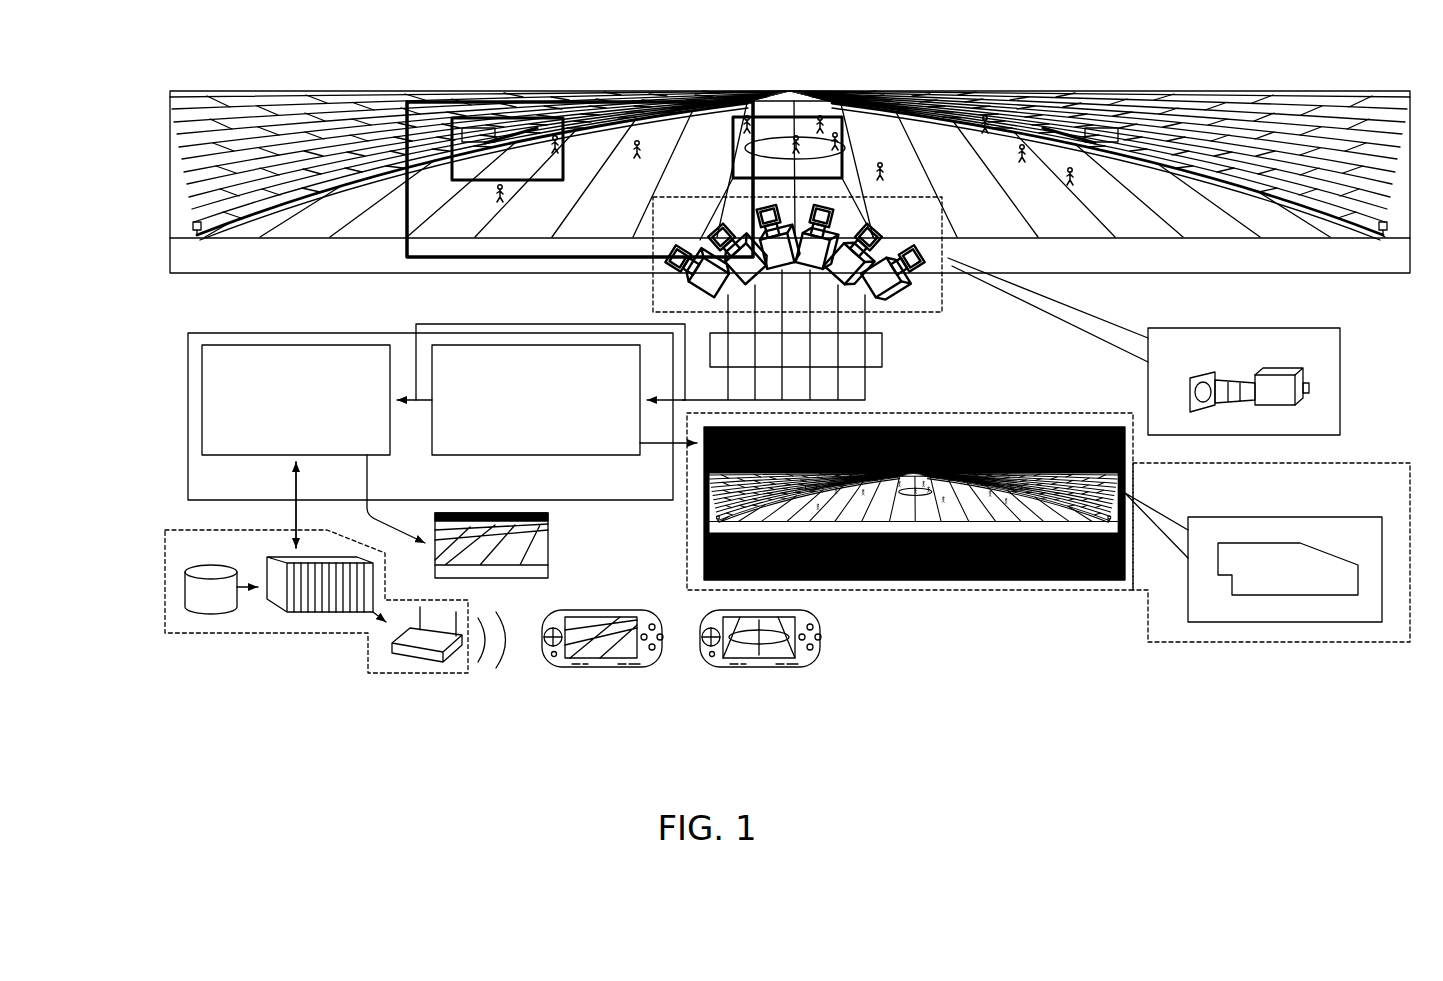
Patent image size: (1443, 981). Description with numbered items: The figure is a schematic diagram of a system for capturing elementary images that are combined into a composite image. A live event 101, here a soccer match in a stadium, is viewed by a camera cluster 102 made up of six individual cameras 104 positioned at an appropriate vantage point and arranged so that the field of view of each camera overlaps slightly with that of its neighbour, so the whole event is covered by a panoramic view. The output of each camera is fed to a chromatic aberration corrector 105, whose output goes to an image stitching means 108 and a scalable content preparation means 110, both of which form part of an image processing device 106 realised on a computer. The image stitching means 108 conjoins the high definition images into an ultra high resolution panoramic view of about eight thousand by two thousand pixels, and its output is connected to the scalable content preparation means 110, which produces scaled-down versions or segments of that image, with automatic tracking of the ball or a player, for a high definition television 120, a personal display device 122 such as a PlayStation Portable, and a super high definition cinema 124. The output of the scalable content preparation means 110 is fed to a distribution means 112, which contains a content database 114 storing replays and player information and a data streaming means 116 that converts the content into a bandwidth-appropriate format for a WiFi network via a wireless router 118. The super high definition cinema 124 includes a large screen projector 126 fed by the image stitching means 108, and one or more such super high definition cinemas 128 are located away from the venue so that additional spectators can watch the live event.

The live event 101 is at (1125, 90).
The camera cluster 102 is at (950, 262).
The camera 104 is at (1300, 375).
The chromatic aberration corrector 105 is at (882, 355).
The image processing device 106 is at (333, 333).
The image stitching means 108 is at (502, 345).
The scalable content preparation means 110 is at (265, 345).
The distribution means 112 is at (165, 598).
The content database 114 is at (208, 612).
The data streaming means 116 is at (300, 612).
The wireless router 118 is at (428, 658).
The high definition television 120 is at (548, 548).
The personal display device 122 is at (620, 668).
The super high definition cinema 124 is at (975, 427).
The large screen projector 126 is at (1330, 517).
The super high definition cinema 128 is at (1302, 642).